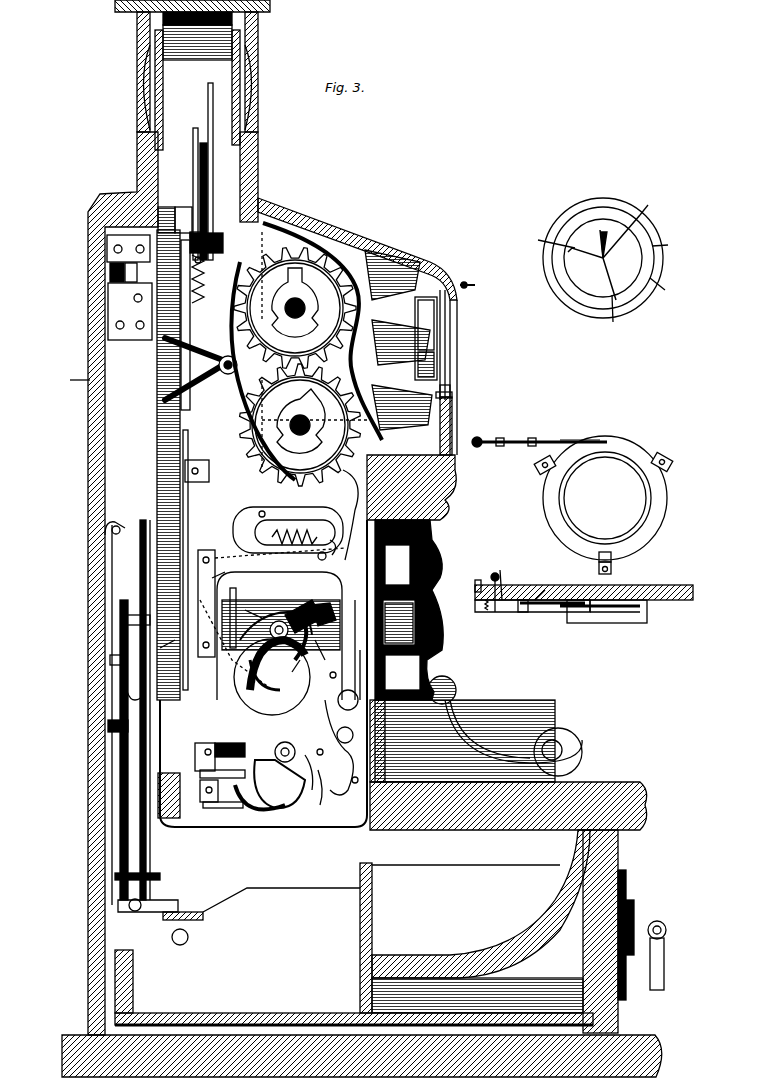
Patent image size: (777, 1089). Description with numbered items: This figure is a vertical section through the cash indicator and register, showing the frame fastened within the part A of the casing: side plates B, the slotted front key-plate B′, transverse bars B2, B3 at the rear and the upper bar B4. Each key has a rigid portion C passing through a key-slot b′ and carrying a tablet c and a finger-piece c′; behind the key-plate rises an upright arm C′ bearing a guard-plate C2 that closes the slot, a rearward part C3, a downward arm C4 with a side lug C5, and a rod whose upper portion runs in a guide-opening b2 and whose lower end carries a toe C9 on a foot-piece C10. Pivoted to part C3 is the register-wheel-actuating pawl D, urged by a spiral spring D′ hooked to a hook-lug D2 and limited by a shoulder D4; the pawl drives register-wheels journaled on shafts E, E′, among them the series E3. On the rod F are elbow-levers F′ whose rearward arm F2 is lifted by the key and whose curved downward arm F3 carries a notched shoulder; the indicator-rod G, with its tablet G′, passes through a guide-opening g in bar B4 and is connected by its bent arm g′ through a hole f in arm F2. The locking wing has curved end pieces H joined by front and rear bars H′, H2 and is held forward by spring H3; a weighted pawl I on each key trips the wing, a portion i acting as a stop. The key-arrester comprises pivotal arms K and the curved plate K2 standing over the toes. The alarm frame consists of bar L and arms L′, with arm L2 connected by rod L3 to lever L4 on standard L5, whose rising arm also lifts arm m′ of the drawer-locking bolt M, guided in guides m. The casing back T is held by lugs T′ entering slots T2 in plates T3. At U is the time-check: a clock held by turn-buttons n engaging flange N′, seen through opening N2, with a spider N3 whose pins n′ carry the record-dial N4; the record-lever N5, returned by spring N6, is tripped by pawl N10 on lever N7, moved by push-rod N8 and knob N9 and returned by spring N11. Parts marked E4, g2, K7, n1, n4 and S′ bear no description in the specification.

The casing part A is at (130, 190).
The side plate B is at (160, 466).
The front plate B′ is at (258, 330).
The transverse bar B2 is at (195, 735).
The transverse bar B3 is at (185, 490).
The upper bar B4 is at (180, 207).
The key-slot b′ is at (228, 500).
The guide-opening b2 is at (200, 760).
The rigid portion of key C is at (375, 675).
The upright arm C′ is at (160, 576).
The guard-plate C2 is at (351, 675).
The rearward part C3 is at (290, 548).
The downwardly-extending arm C4 is at (222, 605).
The side lug C5 is at (224, 582).
The toe C9 is at (228, 808).
The foot-piece C10 is at (205, 808).
The tablet c is at (440, 575).
The finger-piece c′ is at (405, 686).
The register-wheel-actuating pawl D is at (262, 548).
The pawl spring D′ is at (310, 533).
The hook-lug D2 is at (332, 556).
The key shoulder D4 is at (275, 530).
The shaft E is at (310, 422).
The shaft E′ is at (303, 305).
The register-wheels E3 is at (365, 400).
The cam band E4 is at (362, 268).
The rod F is at (278, 620).
The elbow-lever F′ is at (252, 605).
The lever-arm F2 is at (262, 634).
The lever-arm F3 is at (265, 660).
The hole f is at (165, 654).
The indicator-rod G is at (215, 188).
The indicator tablet G′ is at (208, 110).
The guide-opening g is at (223, 243).
The bent arm g′ is at (160, 315).
The spring g2 is at (225, 300).
The curved end piece H is at (272, 670).
The front wing-bar H′ is at (325, 650).
The rear wing-bar H2 is at (305, 660).
The wing spring H3 is at (318, 604).
The wing-tripping pawl I is at (340, 700).
The pawl stop portion i is at (336, 727).
The pivotal arm K is at (279, 775).
The arrester plate K2 is at (260, 805).
The cam lever link K7 is at (305, 778).
The transverse bar L is at (182, 537).
The frame arm L′ is at (292, 572).
The rearward arm L2 is at (130, 520).
The rod L3 is at (138, 586).
The vertically-swinging lever L4 is at (108, 726).
The standard L5 is at (120, 684).
The locking bolt M is at (150, 862).
The guide m is at (128, 627).
The bolt arm m′ is at (110, 660).
The clock-case flange N′ is at (585, 202).
The glass-closed opening N2 is at (452, 395).
The spider N3 is at (668, 245).
The record-dial N4 is at (450, 388).
The record-lever N5 is at (578, 440).
The record-lever spring N6 is at (547, 582).
The trip-lever N7 is at (490, 612).
The push-rod N8 is at (540, 440).
The knob N9 is at (533, 440).
The trip-pawl N10 is at (502, 440).
The return spring N11 is at (478, 600).
The turn-button n is at (540, 470).
The spider pin n′ is at (593, 266).
The plate extension n1 is at (615, 609).
The dial shaft n4 is at (440, 296).
The spring S′ is at (318, 787).
The casing back T is at (73, 385).
The lug T′ is at (108, 290).
The slot T2 is at (128, 283).
The end plate T3 is at (108, 318).
The time-check device U is at (443, 338).